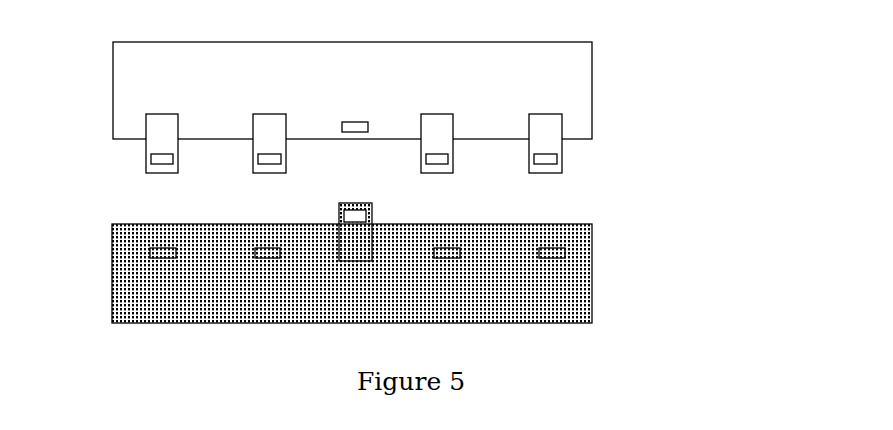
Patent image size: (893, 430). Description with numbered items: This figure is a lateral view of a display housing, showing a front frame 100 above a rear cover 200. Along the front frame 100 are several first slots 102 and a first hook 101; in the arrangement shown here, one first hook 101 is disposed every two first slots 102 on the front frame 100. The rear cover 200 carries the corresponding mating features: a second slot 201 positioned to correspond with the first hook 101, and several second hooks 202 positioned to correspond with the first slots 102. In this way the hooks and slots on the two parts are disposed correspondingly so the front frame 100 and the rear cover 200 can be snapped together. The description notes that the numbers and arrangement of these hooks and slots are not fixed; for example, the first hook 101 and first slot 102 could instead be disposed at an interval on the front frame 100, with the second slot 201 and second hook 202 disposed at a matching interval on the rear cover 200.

The front frame 100 is at (572, 75).
The first hook 101 is at (358, 128).
The first slot 102 is at (158, 145).
The rear cover 200 is at (572, 280).
The second slot 201 is at (363, 244).
The second hook 202 is at (158, 253).